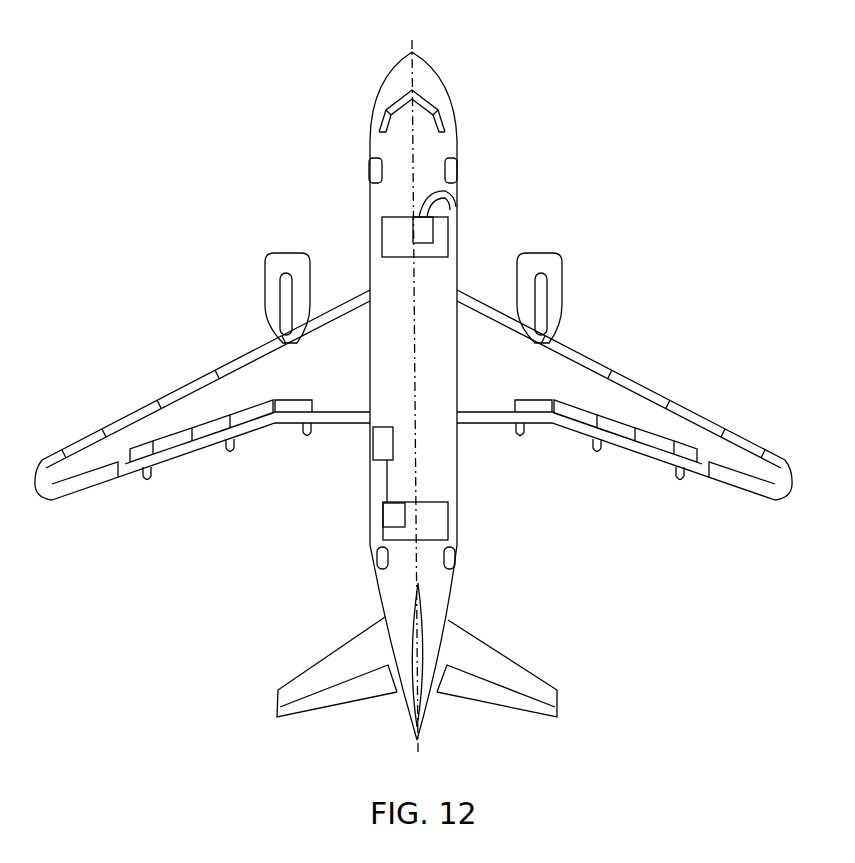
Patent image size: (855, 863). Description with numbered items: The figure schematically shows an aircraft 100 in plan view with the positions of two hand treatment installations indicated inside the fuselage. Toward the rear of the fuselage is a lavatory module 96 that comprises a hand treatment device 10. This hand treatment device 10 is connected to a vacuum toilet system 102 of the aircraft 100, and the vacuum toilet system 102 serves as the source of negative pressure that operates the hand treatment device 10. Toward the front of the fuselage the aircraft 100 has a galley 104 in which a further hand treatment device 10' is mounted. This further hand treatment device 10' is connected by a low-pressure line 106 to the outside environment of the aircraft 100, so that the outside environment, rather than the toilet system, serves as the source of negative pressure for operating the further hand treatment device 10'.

The aircraft 100 is at (553, 98).
The galley 104 is at (382, 228).
The low-pressure line 106 is at (462, 203).
The further hand treatment device 10' is at (477, 233).
The vacuum toilet system 102 is at (373, 438).
The lavatory module 96 is at (448, 520).
The hand treatment device 10 is at (342, 538).